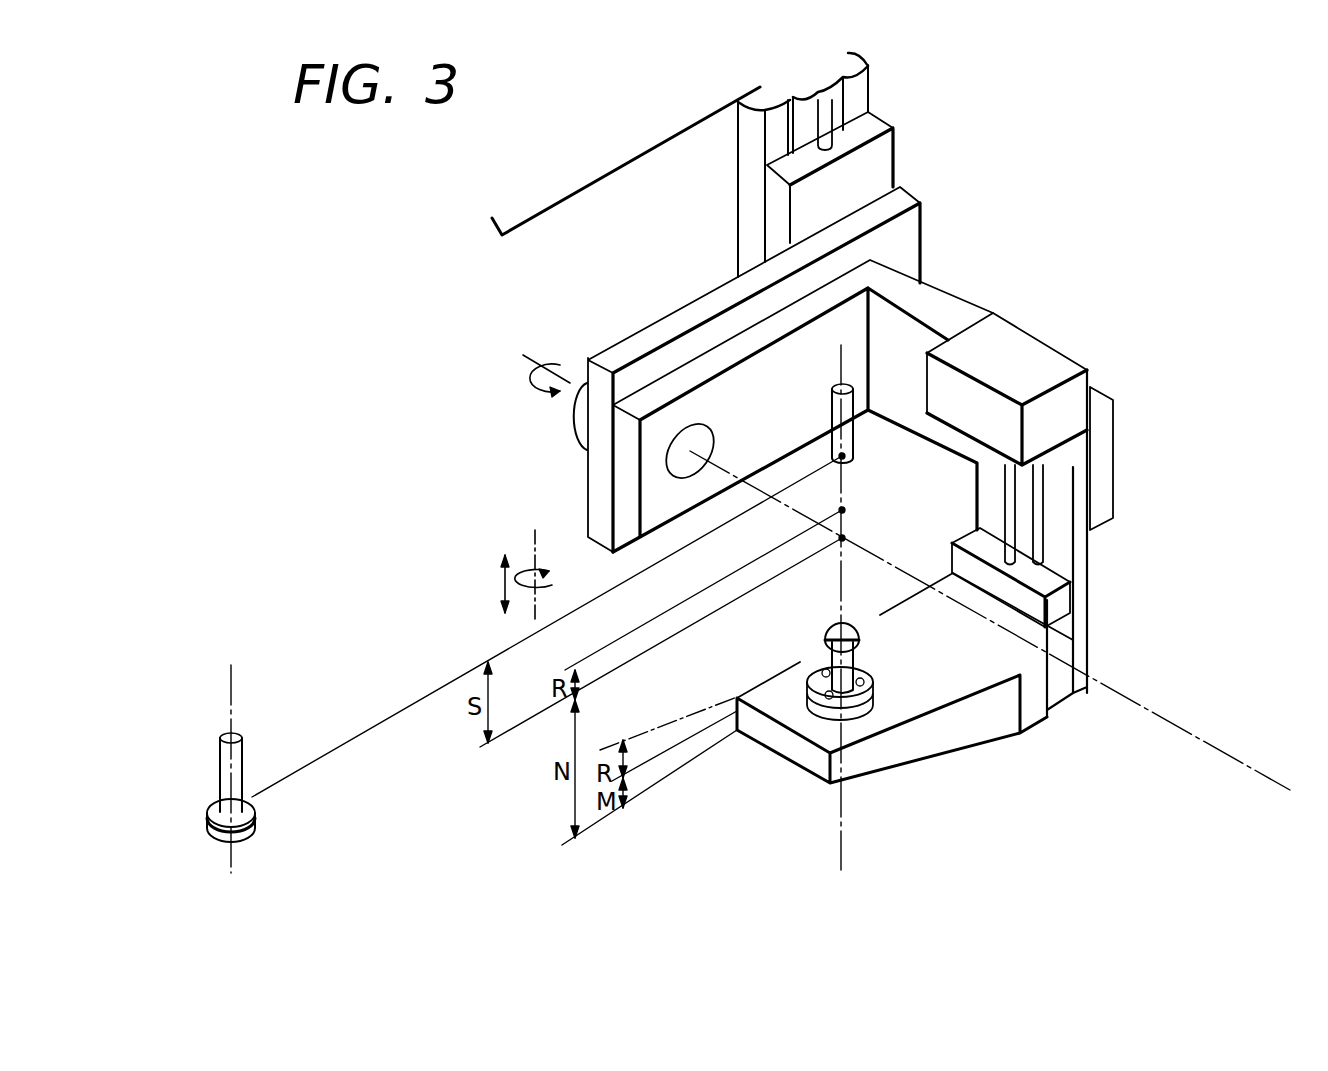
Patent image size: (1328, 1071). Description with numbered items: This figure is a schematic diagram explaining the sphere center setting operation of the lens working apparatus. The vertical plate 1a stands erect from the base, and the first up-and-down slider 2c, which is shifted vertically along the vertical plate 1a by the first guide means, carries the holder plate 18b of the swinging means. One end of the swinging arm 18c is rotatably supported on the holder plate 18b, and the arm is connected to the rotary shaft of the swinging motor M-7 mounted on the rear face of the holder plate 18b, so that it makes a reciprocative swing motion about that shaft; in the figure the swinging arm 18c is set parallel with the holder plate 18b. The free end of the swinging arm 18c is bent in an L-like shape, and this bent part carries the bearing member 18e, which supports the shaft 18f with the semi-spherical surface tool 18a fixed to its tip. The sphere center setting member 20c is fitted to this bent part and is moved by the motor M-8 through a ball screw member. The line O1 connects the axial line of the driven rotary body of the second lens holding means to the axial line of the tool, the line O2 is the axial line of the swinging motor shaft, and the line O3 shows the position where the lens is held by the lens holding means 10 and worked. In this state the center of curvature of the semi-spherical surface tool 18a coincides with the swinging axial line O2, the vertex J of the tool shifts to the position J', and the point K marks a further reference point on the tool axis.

The vertical plate 1a is at (657, 150).
The first up-and-down slider 2c is at (888, 147).
The holder plate 18b is at (903, 195).
The swinging arm 18c is at (933, 298).
The motor M-8 is at (1047, 353).
The swinging motor M-7 is at (580, 425).
The lens holding means 10 is at (832, 407).
The point K is at (848, 456).
The shifted vertex position J' is at (736, 582).
The vertex of the semi-spherical surface tool J is at (696, 639).
The connecting line O1 is at (846, 838).
The swinging axial line O2 is at (1222, 762).
The working position line O3 is at (329, 755).
The sphere center setting member 20c is at (1035, 690).
The bearing member 18e is at (855, 715).
The shaft 18f is at (855, 657).
The semi-spherical surface tool 18a is at (827, 628).